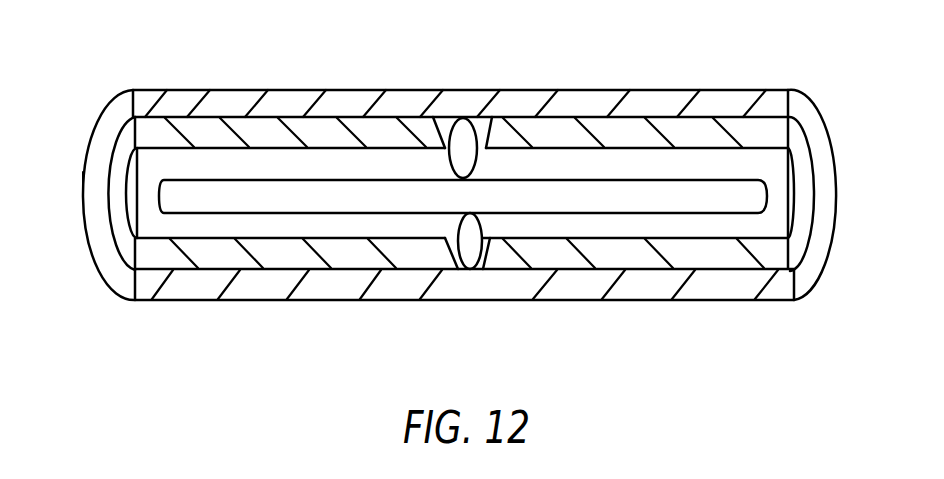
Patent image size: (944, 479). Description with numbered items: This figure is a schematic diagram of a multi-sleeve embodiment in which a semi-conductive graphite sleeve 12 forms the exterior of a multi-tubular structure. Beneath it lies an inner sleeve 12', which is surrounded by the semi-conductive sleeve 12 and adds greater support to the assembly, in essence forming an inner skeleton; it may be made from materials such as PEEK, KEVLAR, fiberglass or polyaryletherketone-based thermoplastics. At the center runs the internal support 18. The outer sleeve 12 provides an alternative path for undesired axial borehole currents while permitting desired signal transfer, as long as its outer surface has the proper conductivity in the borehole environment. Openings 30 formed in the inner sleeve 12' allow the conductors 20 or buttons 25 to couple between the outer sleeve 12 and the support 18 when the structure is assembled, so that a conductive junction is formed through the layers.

The semi-conductive sleeve 12 is at (459, 167).
The inner sleeve 12' is at (497, 179).
The support 18 is at (160, 190).
The conductors 20 is at (457, 118).
The buttons 25 is at (472, 250).
The openings 30 is at (483, 130).